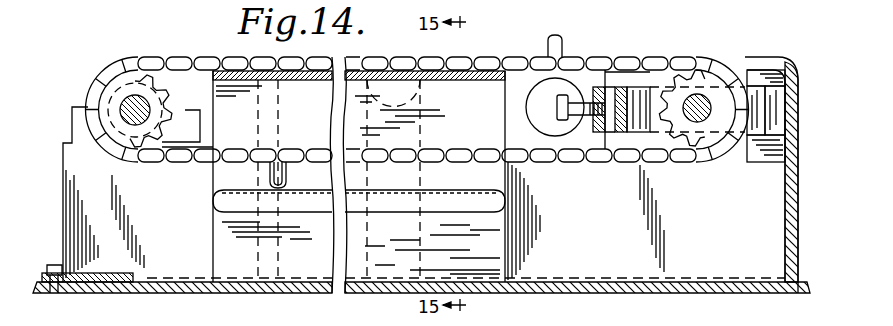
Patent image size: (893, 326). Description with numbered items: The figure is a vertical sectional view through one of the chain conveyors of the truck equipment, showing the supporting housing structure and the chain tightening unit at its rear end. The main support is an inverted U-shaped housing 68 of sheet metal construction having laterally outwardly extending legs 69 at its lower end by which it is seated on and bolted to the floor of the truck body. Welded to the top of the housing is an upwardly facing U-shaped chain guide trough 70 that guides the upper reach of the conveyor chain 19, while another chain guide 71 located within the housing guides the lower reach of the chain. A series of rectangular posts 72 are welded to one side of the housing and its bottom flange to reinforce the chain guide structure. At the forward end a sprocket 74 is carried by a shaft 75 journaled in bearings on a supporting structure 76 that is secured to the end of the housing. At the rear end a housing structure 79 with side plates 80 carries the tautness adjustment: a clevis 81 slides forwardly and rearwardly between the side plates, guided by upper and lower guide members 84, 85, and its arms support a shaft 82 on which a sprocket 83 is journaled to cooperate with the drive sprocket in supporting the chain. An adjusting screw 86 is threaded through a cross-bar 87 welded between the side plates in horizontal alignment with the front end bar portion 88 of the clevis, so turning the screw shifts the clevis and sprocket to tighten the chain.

The conveyor chain 19 is at (598, 60).
The inverted U-shaped housing 68 is at (472, 90).
The legs 69 is at (318, 279).
The chain guide trough 70 is at (255, 58).
The chain guide 71 is at (313, 203).
The rectangular posts 72 is at (258, 114).
The sprocket 74 is at (176, 80).
The shaft 75 is at (155, 114).
The supporting structure 76 is at (68, 214).
The housing structure 79 is at (756, 240).
The side plates 80 is at (517, 177).
The clevis 81 is at (756, 162).
The shaft 82 is at (702, 104).
The sprocket 83 is at (665, 152).
The upper guide member 84 is at (758, 76).
The lower guide member 85 is at (745, 152).
The adjusting screw 86 is at (574, 118).
The cross-bar 87 is at (599, 150).
The front end bar portion 88 is at (632, 100).